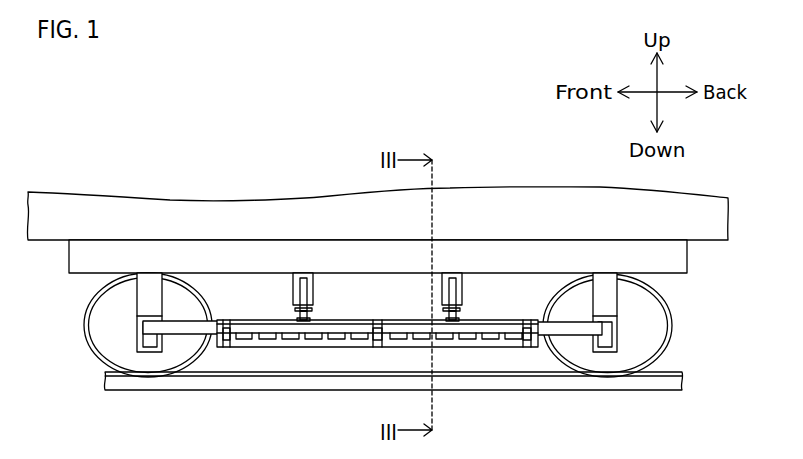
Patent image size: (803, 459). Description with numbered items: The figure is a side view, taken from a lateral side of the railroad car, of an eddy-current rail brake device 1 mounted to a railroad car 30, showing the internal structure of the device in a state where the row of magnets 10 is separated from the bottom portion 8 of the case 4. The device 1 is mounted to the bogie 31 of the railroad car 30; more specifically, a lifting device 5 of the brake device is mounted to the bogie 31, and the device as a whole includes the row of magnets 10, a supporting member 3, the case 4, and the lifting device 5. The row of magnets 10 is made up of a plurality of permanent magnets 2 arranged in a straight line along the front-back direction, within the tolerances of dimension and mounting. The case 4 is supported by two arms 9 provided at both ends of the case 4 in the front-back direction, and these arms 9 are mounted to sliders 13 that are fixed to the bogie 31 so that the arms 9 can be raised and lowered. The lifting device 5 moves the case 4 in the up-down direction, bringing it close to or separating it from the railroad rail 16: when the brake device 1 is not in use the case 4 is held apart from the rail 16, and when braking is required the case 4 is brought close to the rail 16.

The eddy-current rail brake device 1 is at (512, 298).
The permanent magnets 2 is at (245, 342).
The supporting member 3 is at (284, 320).
The case 4 is at (358, 352).
The lifting device 5 is at (313, 285).
The bottom portion 8 is at (333, 340).
The arms 9 is at (195, 335).
The row of magnets 10 is at (298, 352).
The sliders 13 is at (150, 352).
The railroad rail 16 is at (678, 373).
The railroad car 30 is at (75, 205).
The bogie 31 is at (155, 250).